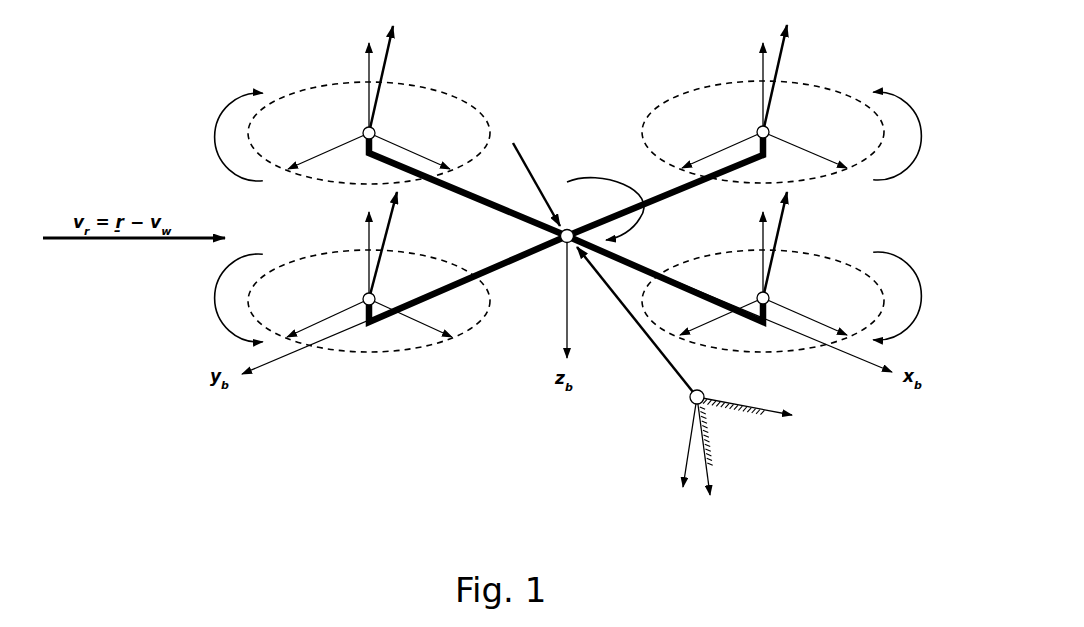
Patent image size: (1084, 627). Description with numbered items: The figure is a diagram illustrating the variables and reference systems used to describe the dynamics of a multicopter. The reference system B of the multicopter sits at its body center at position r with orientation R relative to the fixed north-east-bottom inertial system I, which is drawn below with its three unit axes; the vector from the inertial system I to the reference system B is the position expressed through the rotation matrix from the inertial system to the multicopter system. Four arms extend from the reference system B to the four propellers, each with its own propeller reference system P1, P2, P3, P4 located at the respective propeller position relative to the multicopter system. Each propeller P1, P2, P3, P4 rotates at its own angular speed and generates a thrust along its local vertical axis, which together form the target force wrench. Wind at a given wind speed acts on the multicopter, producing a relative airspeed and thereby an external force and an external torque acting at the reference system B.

The propeller reference system P1 is at (805, 266).
The propeller reference system P2 is at (320, 267).
The propeller reference system P3 is at (321, 103).
The propeller reference system P4 is at (805, 102).
The multicopter reference system B is at (573, 197).
The inertial system I is at (699, 388).